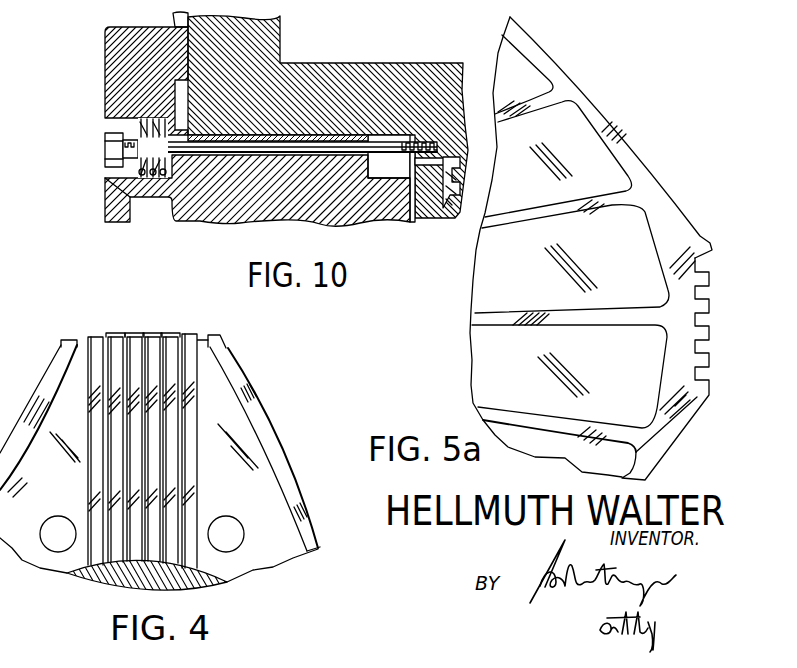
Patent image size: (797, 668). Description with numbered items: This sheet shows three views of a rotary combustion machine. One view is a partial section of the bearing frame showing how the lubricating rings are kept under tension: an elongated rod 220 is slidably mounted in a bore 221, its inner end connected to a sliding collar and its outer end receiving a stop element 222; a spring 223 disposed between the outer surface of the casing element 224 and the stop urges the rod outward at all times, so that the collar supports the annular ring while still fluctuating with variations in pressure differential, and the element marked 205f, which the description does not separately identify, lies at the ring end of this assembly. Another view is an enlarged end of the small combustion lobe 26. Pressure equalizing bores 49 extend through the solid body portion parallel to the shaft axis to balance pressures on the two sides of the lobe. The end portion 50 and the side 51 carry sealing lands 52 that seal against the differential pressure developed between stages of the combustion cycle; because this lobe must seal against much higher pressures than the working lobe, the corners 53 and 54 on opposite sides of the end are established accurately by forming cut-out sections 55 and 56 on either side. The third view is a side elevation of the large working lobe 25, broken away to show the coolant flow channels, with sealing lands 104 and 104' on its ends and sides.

In FIG. 10, the elongated rod 220 is at (248, 143).
In FIG. 10, the bore 221 is at (306, 135).
In FIG. 10, the stop element 222 is at (122, 170).
In FIG. 10, the spring 223 is at (151, 122).
In FIG. 10, the casing element 224 is at (200, 213).
In FIG. 10, the stepped retaining piece 205f is at (451, 212).
In FIG. 5A, the working lobe 25 is at (630, 139).
In FIG. 5A, the sealing land 104 is at (675, 343).
In FIG. 5A, the sealing land 104' is at (570, 276).
In FIG. 4, the combustion lobe 26 is at (313, 518).
In FIG. 4, the pressure equalizing bore 49 is at (60, 525).
In FIG. 4, the end portion 50 is at (173, 333).
In FIG. 4, the side 51 is at (253, 441).
In FIG. 4, the sealing land 52 is at (152, 333).
In FIG. 4, the corner 53 is at (214, 336).
In FIG. 4, the corner 54 is at (68, 336).
In FIG. 4, the cut-out section 55 is at (226, 346).
In FIG. 4, the cut-out section 56 is at (61, 343).